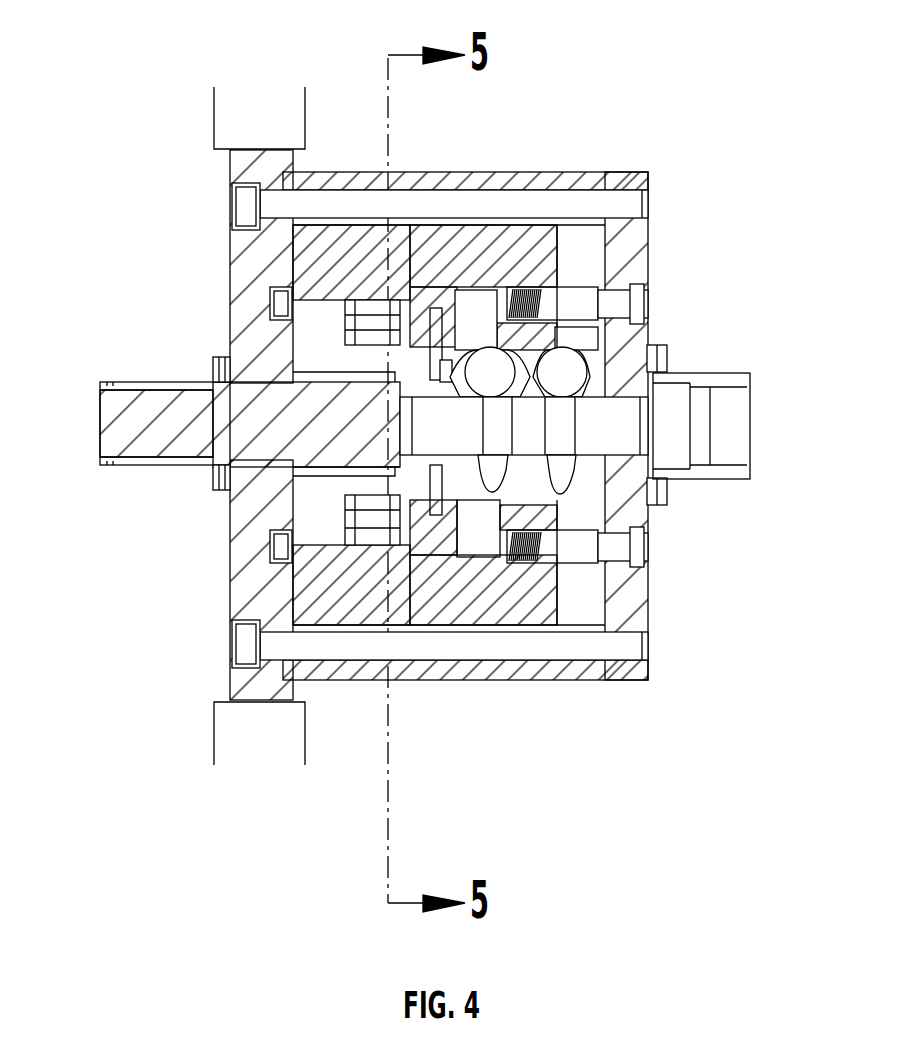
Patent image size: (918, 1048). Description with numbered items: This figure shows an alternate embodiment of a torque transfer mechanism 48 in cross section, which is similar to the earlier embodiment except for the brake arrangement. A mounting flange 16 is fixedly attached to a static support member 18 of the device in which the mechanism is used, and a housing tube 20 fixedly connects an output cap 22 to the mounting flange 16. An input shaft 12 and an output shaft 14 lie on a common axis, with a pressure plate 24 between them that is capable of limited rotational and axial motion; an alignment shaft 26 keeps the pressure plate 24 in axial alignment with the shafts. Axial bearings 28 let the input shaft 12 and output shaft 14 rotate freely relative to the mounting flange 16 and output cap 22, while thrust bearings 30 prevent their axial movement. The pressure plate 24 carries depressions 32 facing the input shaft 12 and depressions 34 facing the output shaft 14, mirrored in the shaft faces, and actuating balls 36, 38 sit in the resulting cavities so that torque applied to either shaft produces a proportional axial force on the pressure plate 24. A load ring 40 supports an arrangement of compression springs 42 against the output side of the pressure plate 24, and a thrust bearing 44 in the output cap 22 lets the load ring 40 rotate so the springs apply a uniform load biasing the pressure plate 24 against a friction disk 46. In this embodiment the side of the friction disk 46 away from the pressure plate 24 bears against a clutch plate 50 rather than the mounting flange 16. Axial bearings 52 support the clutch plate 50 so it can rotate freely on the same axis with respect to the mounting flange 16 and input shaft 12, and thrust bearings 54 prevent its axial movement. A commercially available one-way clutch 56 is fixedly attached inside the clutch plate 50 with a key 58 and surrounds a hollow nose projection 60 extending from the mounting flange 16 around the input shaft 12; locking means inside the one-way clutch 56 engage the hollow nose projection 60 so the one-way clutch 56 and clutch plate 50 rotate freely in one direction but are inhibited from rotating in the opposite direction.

The input shaft 12 is at (128, 380).
The output shaft 14 is at (742, 370).
The mounting flange 16 is at (230, 280).
The static support member 18 is at (214, 116).
The housing tube 20 is at (477, 670).
The output cap 22 is at (645, 174).
The pressure plate 24 is at (487, 222).
The alignment shaft 26 is at (555, 545).
The axial bearings 28 is at (633, 362).
The thrust bearings 30 is at (440, 370).
The depressions 32 is at (475, 468).
The depressions 34 is at (577, 470).
The actuating ball 36 is at (490, 365).
The actuating ball 38 is at (563, 365).
The load ring 40 is at (600, 585).
The compression springs 42 is at (548, 490).
The thrust bearing 44 is at (628, 290).
The friction disk 46 is at (445, 255).
The torque transfer mechanism 48 is at (782, 86).
The clutch plate 50 is at (455, 555).
The axial bearings 52 is at (335, 490).
The thrust bearings 54 is at (287, 287).
The one-way clutch 56 is at (372, 535).
The key 58 is at (365, 298).
The hollow nose projection 60 is at (333, 478).